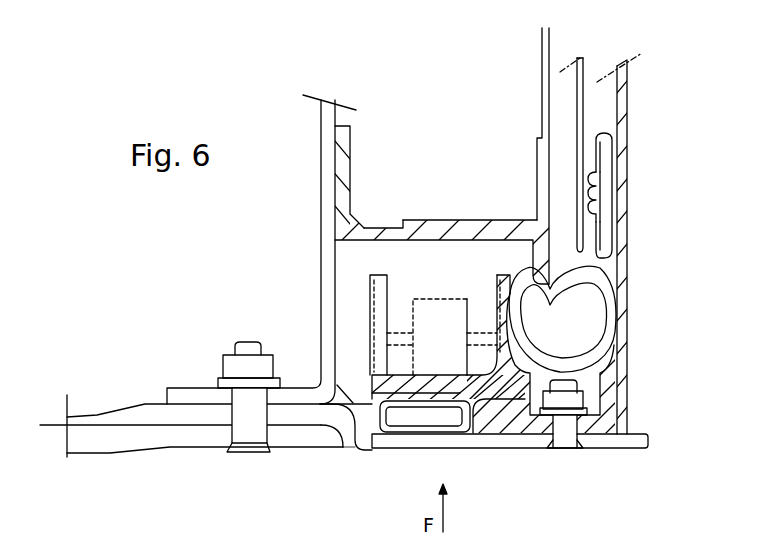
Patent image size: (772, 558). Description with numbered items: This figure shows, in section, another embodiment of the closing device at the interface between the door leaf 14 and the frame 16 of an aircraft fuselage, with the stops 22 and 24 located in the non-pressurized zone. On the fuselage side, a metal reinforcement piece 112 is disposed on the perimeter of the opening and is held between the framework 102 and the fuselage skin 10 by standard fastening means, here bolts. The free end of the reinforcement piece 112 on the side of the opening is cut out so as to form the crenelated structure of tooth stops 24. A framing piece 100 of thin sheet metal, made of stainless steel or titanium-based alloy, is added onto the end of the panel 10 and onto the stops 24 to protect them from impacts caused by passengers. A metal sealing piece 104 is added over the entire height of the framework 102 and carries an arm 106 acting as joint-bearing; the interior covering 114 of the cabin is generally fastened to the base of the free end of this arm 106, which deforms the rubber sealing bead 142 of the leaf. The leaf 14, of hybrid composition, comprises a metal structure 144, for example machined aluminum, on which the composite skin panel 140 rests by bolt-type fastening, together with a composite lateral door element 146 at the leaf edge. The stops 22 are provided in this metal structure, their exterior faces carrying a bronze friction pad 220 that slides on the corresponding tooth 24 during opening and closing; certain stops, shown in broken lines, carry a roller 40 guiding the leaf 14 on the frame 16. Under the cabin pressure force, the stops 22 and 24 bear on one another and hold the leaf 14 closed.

The skin 10 is at (104, 447).
The leaf 14 is at (541, 456).
The frame 16 is at (358, 464).
The tooth stop 22 is at (381, 408).
The tooth stop 24 is at (407, 413).
The roller 40 is at (433, 304).
The framing piece 100 is at (303, 455).
The framework 102 is at (323, 229).
The sealing piece 104 is at (365, 212).
The arm 106 is at (470, 231).
The reinforcement piece 112 is at (143, 410).
The covering 114 is at (541, 100).
The skin 140 is at (474, 441).
The sealing means 142 is at (612, 315).
The metal structure 144 is at (628, 238).
The lateral door element 146 is at (584, 70).
The friction pad 220 is at (372, 399).